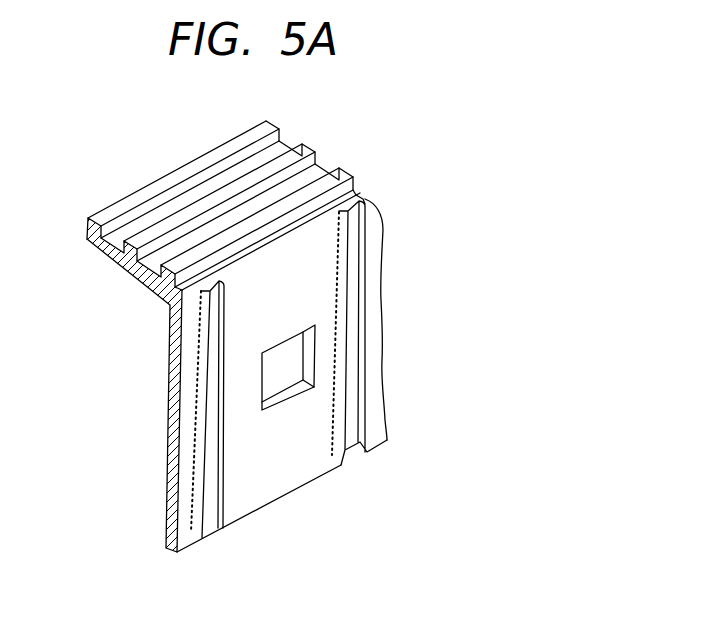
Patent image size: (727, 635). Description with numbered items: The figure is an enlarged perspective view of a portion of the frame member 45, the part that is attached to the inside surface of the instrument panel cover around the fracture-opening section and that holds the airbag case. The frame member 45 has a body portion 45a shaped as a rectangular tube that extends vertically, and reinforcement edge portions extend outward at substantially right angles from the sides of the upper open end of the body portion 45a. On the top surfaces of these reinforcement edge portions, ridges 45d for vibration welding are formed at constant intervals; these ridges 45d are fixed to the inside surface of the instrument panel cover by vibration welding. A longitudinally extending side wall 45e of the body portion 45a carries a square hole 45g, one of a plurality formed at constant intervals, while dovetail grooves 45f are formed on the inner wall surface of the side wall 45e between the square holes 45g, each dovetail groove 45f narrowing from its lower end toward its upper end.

The frame member 45 is at (364, 129).
The body portion 45a is at (163, 400).
The ridges 45d is at (198, 203).
The longitudinally extending side wall 45e is at (297, 470).
The dovetail groove 45f is at (208, 470).
The square hole 45g is at (283, 352).